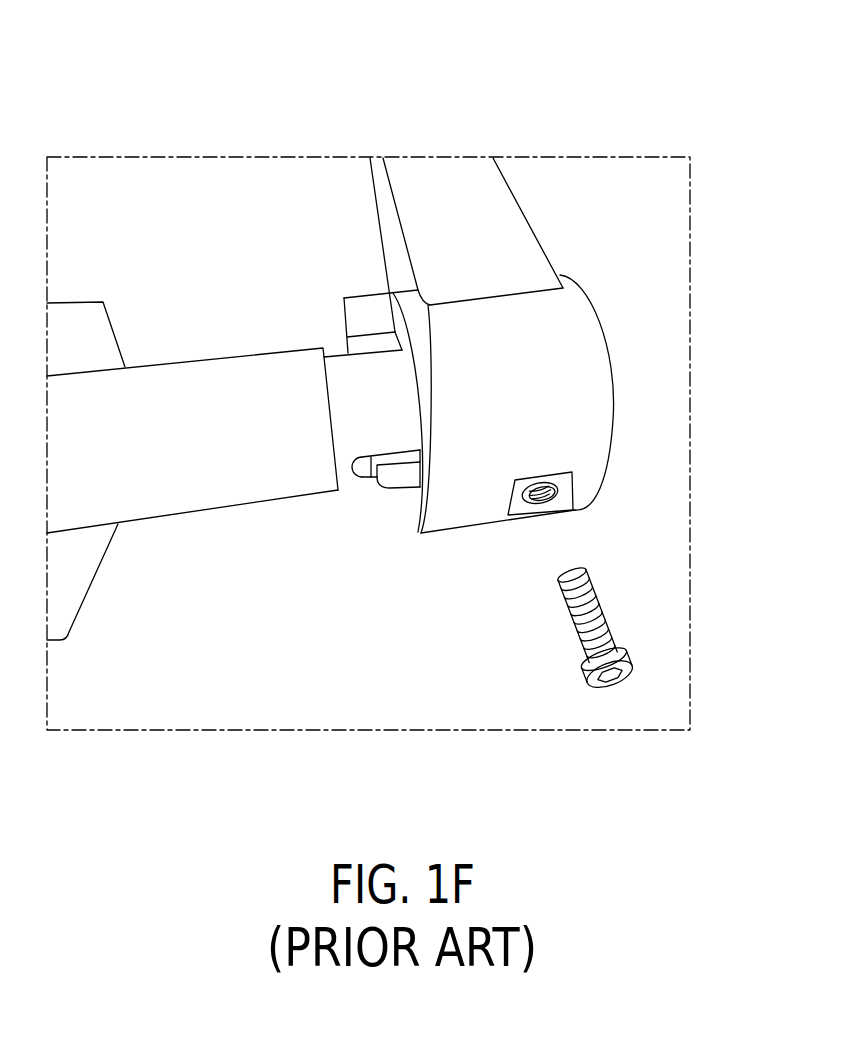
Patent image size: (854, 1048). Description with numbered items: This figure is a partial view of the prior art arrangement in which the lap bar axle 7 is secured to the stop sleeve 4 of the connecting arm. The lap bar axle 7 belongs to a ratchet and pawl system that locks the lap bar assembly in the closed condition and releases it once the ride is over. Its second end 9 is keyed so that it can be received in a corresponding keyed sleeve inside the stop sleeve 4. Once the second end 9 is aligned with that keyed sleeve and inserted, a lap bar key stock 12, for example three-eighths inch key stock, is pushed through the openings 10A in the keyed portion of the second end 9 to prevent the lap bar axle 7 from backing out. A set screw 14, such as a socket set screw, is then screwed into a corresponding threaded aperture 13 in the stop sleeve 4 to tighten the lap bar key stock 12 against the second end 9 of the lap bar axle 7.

The stop sleeve 4 is at (603, 300).
The lap bar axle 7 is at (235, 330).
The second end 9 is at (333, 330).
The openings 10A is at (371, 477).
The lap bar key stock 12 is at (395, 481).
The threaded aperture 13 is at (540, 503).
The set screw 14 is at (628, 653).